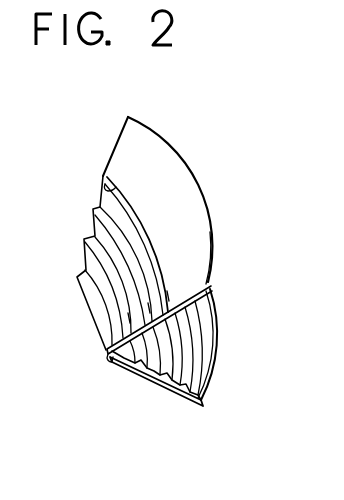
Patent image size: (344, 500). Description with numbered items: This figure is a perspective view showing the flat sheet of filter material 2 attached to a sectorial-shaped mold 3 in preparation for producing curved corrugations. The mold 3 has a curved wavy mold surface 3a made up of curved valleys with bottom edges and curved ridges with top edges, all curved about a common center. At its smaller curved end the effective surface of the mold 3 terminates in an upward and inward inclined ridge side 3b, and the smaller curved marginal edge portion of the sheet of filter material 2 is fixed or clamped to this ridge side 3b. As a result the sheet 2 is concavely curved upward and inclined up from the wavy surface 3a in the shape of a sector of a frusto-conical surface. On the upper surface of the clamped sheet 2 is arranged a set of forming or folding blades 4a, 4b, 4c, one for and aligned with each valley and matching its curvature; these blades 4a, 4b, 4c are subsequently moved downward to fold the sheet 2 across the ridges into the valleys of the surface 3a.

The flat sheet of filter material 2 is at (122, 129).
The sectorial-shaped mold 3 is at (180, 400).
The curved wavy mold surface 3a is at (192, 350).
The inclined ridge side 3b is at (111, 365).
The forming or folding blade 4a is at (110, 288).
The forming or folding blade 4b is at (101, 222).
The forming or folding blade 4c is at (105, 190).